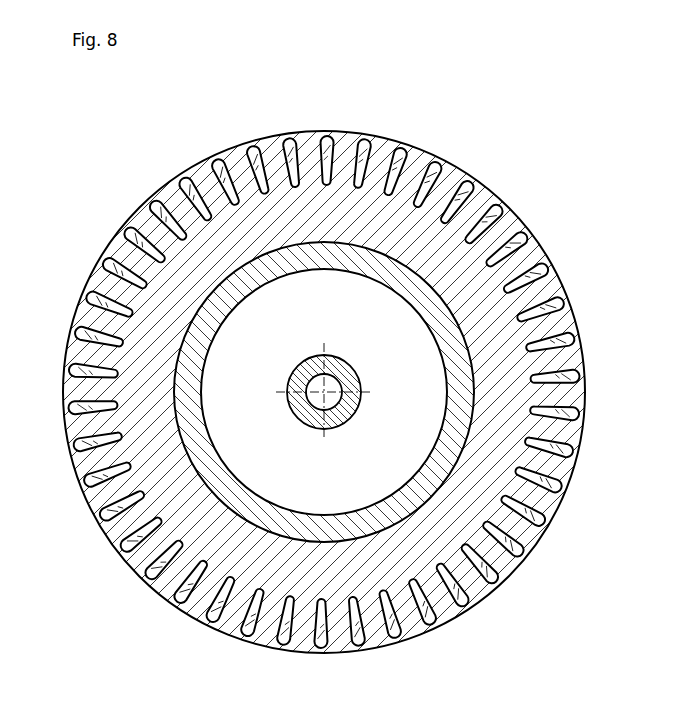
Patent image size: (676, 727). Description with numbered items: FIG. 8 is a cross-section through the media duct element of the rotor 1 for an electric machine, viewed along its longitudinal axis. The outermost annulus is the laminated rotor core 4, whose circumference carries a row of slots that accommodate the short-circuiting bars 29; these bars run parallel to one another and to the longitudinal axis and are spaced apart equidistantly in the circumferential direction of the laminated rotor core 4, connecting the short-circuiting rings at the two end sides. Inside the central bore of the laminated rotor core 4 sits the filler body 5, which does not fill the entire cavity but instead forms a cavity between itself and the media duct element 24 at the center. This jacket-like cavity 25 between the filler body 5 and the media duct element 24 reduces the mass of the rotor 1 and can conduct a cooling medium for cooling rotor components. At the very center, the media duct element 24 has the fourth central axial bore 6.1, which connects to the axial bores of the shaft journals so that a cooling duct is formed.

The rotor 1 is at (142, 157).
The laminated rotor core 4 is at (340, 152).
The filler body 5 is at (278, 262).
The short-circuiting bars 29 is at (393, 143).
The media duct element 24 is at (345, 378).
The jacket-like cavity 25 is at (417, 366).
The fourth central axial bore 6.1 is at (342, 424).